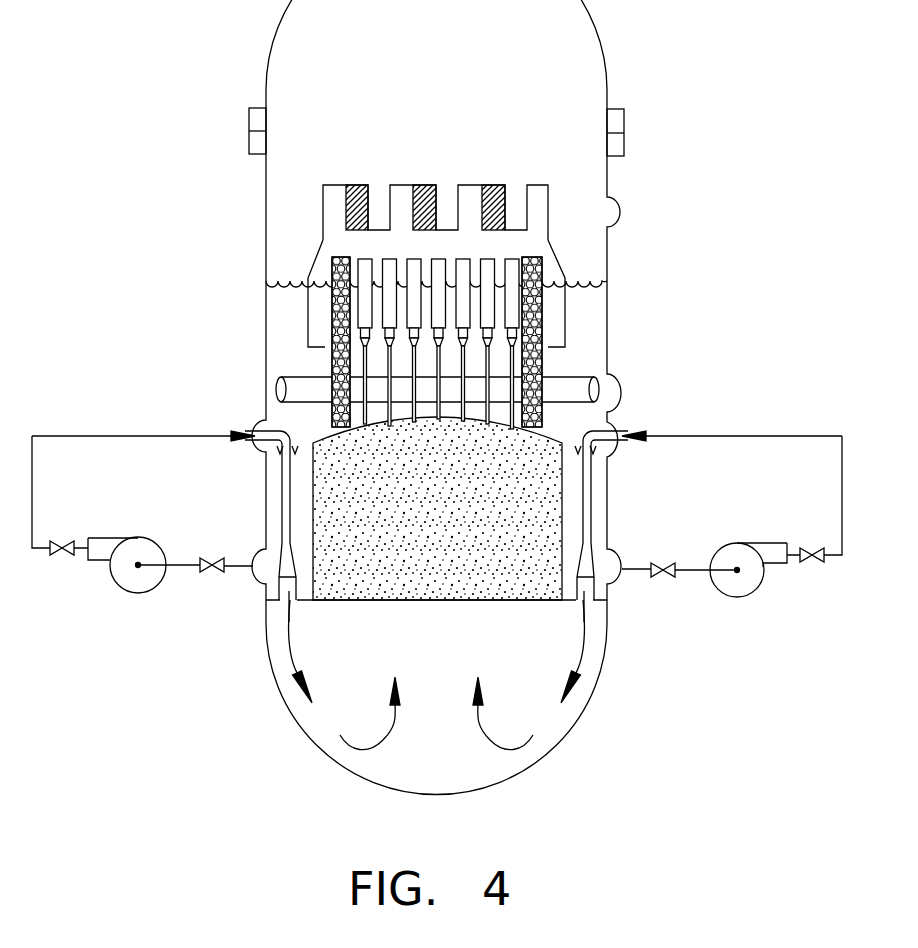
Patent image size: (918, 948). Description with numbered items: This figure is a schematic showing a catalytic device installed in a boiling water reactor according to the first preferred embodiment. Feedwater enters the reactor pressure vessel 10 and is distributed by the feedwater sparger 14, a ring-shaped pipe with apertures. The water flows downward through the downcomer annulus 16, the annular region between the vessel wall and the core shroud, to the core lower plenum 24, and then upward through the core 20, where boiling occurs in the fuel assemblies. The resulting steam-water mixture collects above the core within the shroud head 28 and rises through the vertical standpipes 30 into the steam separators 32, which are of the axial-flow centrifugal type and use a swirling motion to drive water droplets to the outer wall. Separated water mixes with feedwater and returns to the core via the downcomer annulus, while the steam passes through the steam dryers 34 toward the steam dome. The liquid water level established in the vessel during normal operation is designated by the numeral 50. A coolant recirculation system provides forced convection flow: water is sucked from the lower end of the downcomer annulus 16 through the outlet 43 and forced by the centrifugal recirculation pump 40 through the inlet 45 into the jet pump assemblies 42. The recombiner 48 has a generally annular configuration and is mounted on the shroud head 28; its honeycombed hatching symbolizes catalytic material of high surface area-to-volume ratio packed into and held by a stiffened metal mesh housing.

The reactor pressure vessel 10 is at (266, 356).
The feedwater sparger 14 is at (583, 377).
The downcomer annulus 16 is at (266, 490).
The core 20 is at (575, 486).
The core lower plenum 24 is at (535, 712).
The shroud head 28 is at (313, 440).
The vertical standpipes 30 is at (363, 365).
The steam separator 32 is at (365, 297).
The steam dryers 34 is at (552, 187).
The centrifugal recirculation pump 40 is at (750, 596).
The jet pump assemblies 42 is at (588, 552).
The outlet 43 is at (624, 436).
The inlet 45 is at (622, 570).
The recombiner 48 is at (570, 311).
The liquid water level 50 is at (580, 280).